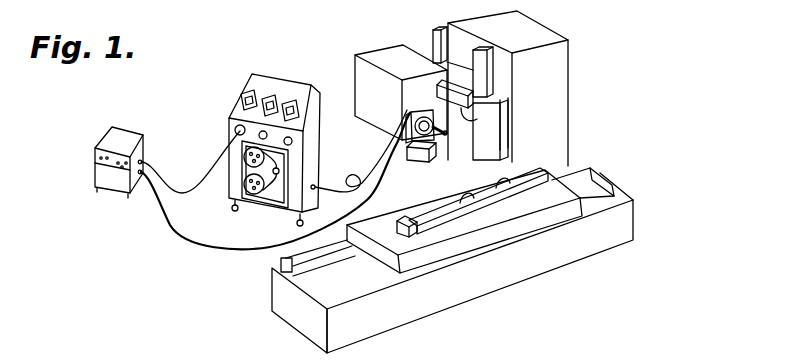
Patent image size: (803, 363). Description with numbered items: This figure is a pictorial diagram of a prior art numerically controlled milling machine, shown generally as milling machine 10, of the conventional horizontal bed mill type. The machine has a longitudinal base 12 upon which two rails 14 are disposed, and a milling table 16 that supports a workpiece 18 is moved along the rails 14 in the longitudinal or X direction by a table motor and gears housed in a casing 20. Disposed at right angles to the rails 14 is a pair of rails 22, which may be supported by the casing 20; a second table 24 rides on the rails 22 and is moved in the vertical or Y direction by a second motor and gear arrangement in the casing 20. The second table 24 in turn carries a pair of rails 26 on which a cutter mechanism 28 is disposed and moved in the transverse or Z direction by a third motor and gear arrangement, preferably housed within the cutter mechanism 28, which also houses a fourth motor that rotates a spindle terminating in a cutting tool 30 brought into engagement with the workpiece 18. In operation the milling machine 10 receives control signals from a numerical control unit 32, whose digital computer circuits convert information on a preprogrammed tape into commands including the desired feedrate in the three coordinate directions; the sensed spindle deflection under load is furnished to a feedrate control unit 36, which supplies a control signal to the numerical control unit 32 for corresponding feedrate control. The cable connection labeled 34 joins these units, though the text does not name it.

The milling machine 10 is at (621, 78).
The longitudinal base 12 is at (636, 223).
The rails 14 is at (292, 289).
The milling table 16 is at (503, 237).
The workpiece 18 is at (552, 173).
The casing 20 is at (568, 40).
The rails 22 is at (477, 70).
The second table 24 is at (510, 124).
The rails 26 is at (407, 150).
The cutter mechanism 28 is at (378, 53).
The cutting tool 30 is at (418, 152).
The numerical control unit 32 is at (276, 81).
The cable 34 is at (408, 109).
The feedrate control unit 36 is at (129, 132).